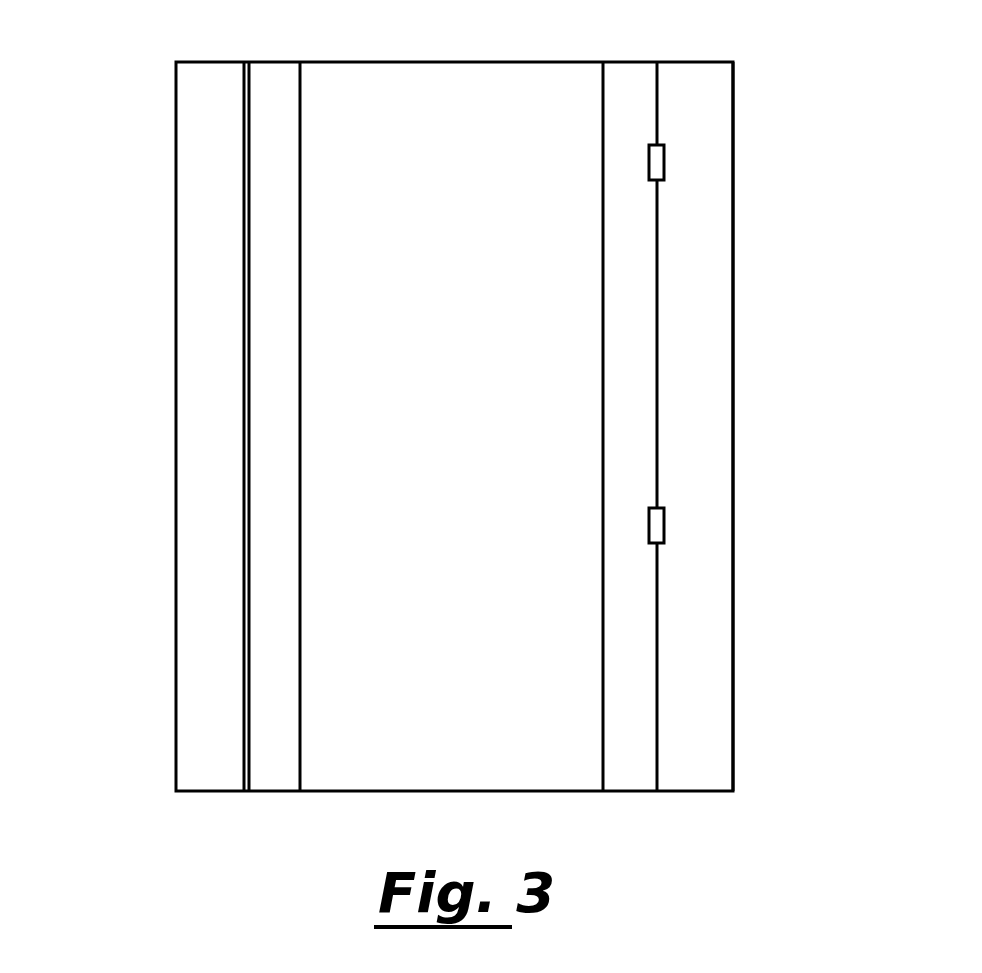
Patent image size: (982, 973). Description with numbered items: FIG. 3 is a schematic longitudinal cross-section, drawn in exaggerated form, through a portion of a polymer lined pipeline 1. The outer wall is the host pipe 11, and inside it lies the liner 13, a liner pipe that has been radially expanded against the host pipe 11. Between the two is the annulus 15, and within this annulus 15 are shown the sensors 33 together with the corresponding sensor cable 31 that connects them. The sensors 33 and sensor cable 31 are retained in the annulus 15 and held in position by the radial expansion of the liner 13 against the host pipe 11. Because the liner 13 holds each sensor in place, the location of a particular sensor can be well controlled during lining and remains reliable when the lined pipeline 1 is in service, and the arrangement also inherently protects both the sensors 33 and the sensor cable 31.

The lined pipeline 1 is at (126, 124).
The host pipe 11 is at (713, 98).
The liner 13 is at (620, 110).
The annulus 15 is at (245, 107).
The sensor cable 31 is at (657, 584).
The sensors 33 is at (658, 162).